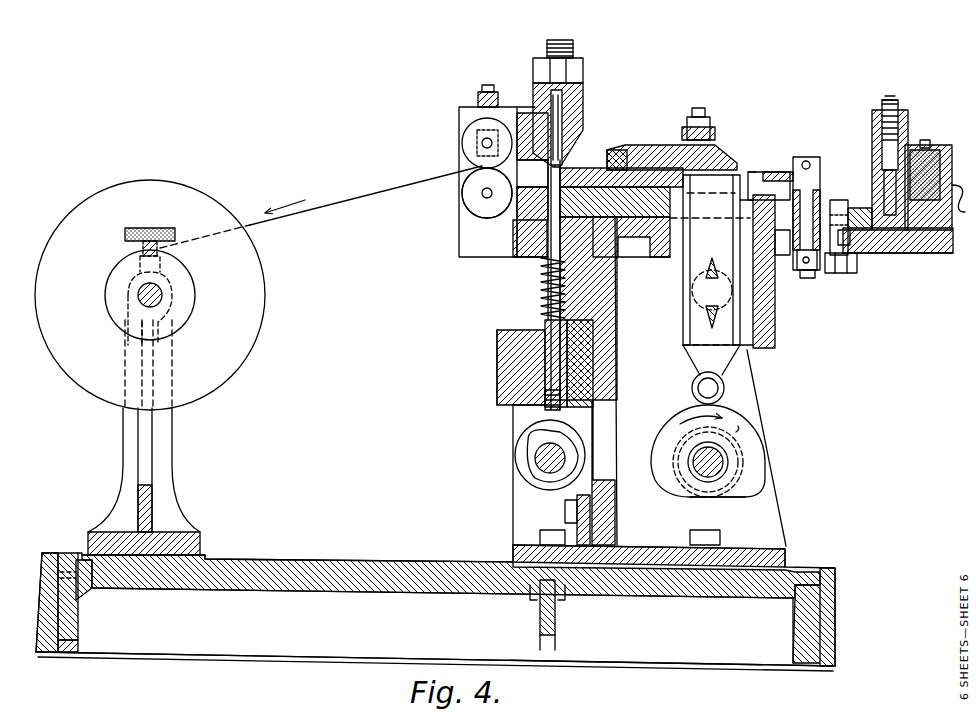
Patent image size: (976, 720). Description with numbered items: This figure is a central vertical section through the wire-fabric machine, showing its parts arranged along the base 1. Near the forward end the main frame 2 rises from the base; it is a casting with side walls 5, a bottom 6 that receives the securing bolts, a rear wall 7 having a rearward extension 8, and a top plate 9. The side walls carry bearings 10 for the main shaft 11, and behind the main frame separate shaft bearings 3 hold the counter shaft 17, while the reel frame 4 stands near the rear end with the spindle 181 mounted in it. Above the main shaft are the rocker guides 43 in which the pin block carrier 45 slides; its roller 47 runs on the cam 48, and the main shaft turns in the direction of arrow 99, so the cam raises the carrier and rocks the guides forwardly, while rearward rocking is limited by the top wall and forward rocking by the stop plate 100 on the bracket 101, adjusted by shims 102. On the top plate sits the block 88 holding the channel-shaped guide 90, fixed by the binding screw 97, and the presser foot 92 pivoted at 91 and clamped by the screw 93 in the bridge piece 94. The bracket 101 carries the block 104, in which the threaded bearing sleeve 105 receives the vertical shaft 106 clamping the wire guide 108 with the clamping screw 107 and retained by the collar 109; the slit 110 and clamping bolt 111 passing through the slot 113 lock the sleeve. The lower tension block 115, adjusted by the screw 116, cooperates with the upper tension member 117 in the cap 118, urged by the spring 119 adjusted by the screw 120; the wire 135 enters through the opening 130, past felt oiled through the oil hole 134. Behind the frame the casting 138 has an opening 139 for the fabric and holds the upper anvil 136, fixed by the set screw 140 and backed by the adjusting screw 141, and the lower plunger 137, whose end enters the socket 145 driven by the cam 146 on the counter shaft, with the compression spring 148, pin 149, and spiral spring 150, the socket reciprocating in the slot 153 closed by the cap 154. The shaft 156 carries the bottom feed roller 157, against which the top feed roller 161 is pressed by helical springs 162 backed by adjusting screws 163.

The base 1 is at (435, 608).
The main frame 2 is at (778, 488).
The shaft bearings 3 is at (561, 520).
The reel frame 4 is at (160, 468).
The side plates or walls 5 is at (643, 341).
The bottom 6 is at (637, 546).
The rear wall 7 is at (606, 312).
The rearward extension 8 is at (579, 343).
The top plate or wall 9 is at (637, 233).
The bearings 10 is at (746, 484).
The main shaft 11 is at (723, 461).
The counter shaft 17 is at (534, 460).
The rocker guides 43 is at (672, 283).
The pin block carrier 45 is at (712, 288).
The roller 47 is at (727, 391).
The cam 48 is at (747, 447).
The block 88 is at (563, 168).
The guide 90 is at (600, 170).
The pivot 91 is at (622, 156).
The presser foot 92 is at (660, 147).
The screw 93 is at (703, 116).
The bridge piece 94 is at (713, 134).
The binding screw 97 is at (673, 194).
The arrow 99 is at (714, 429).
The stop plate 100 is at (753, 236).
The bracket 101 is at (777, 331).
The liners or shims 102 is at (780, 257).
The block or casting 104 is at (885, 255).
The threaded bearing sleeve 105 is at (838, 199).
The vertical shaft 106 is at (800, 158).
The clamping screw 107 is at (808, 163).
The wire guide 108 is at (790, 174).
The collar 109 is at (813, 279).
The horizontal slit 110 is at (856, 214).
The clamping bolt 111 is at (872, 175).
The slot 113 is at (853, 240).
The lower tension block 115 is at (915, 254).
The screw 116 is at (866, 262).
The upper tension member 117 is at (882, 180).
The cap 118 is at (935, 147).
The spring 119 is at (900, 125).
The screw 120 is at (898, 108).
The opening 130 is at (950, 180).
The oil hole 134 is at (924, 140).
The wire 135 is at (368, 188).
The upper stationary hammer or anvil 136 is at (567, 140).
The lower movable plunger or hammer 137 is at (516, 263).
The casting 138 is at (508, 238).
The opening 139 is at (530, 173).
The set screw 140 is at (576, 148).
The adjusting screw 141 is at (576, 49).
The socket or foot piece 145 is at (545, 365).
The cam 146 is at (538, 476).
The compression spring 148 is at (545, 411).
The pin 149 is at (548, 322).
The spiral spring 150 is at (540, 288).
The slot 153 is at (573, 357).
The cap 154 is at (496, 395).
The horizontal shaft 156 is at (482, 194).
The bottom feed roller 157 is at (472, 207).
The top feed roller 161 is at (461, 128).
The helical springs 162 is at (480, 125).
The adjusting screws 163 is at (478, 93).
The spindle 181 is at (165, 296).